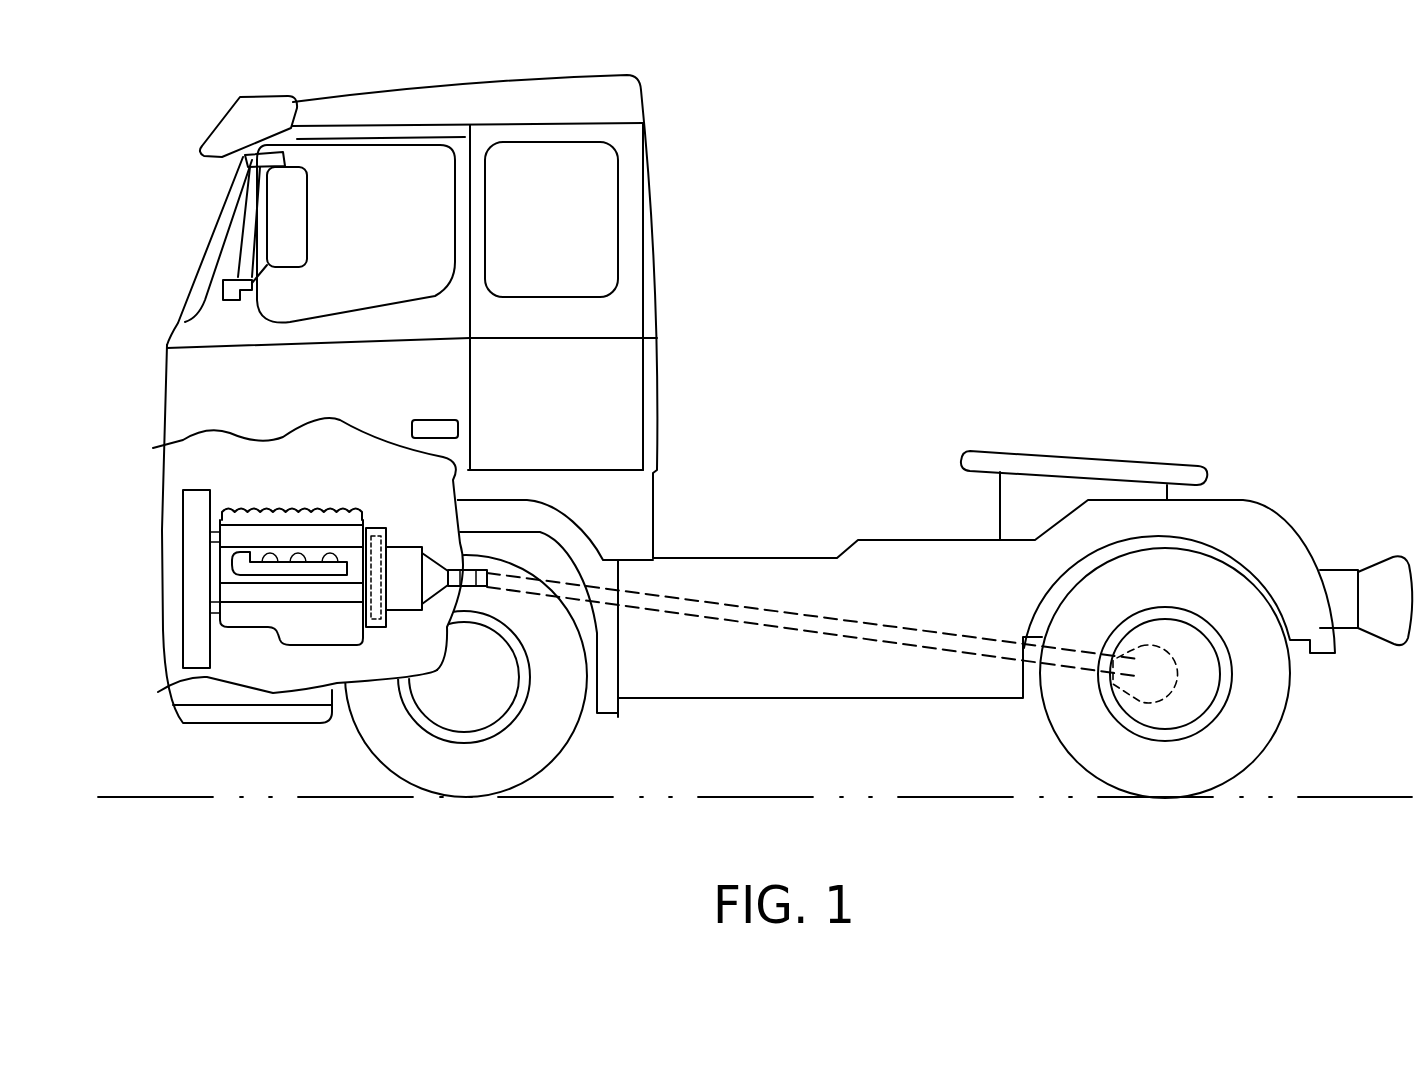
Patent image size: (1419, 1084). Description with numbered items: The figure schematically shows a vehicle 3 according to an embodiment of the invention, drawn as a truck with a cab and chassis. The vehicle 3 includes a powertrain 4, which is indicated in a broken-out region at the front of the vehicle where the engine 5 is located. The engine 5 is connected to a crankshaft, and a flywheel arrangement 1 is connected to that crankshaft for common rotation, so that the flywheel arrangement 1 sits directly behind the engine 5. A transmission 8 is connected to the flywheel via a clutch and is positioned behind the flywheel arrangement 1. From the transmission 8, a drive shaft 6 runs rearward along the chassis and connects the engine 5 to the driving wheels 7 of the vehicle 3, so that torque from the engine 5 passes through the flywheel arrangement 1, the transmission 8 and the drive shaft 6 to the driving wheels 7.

The flywheel arrangement 1 is at (370, 620).
The vehicle 3 is at (930, 273).
The powertrain 4 is at (352, 492).
The engine 5 is at (297, 570).
The drive shaft 6 is at (742, 608).
The driving wheels 7 is at (1168, 768).
The transmission 8 is at (405, 580).